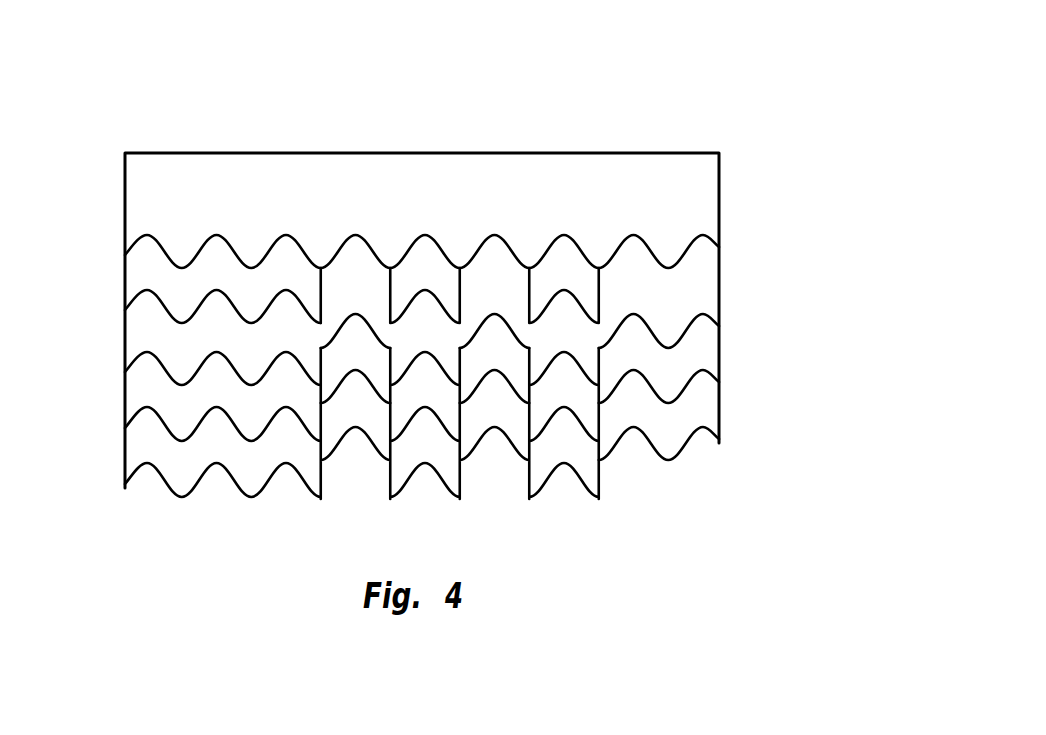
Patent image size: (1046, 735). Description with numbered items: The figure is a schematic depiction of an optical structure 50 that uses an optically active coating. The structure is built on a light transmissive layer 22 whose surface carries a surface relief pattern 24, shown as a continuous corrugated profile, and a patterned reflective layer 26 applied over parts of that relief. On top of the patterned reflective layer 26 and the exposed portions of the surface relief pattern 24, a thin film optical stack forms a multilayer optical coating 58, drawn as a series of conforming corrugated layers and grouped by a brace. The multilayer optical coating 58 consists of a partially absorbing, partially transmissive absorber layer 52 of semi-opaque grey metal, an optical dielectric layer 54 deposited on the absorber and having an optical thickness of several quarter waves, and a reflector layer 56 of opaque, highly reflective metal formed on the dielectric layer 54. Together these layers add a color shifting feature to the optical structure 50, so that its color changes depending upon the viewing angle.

The optical structure 50 is at (563, 127).
The light transmissive layer 22 is at (710, 198).
The surface relief pattern 24 is at (163, 245).
The patterned reflective layer 26 is at (147, 274).
The absorber layer 52 is at (703, 280).
The optical dielectric layer 54 is at (703, 352).
The reflector layer 56 is at (703, 405).
The multilayer optical coating 58 is at (818, 263).